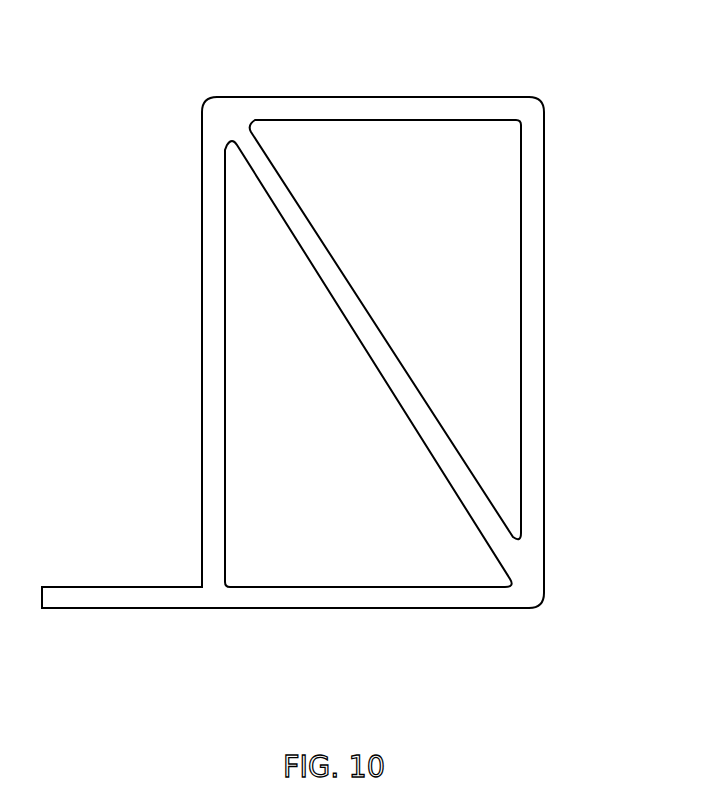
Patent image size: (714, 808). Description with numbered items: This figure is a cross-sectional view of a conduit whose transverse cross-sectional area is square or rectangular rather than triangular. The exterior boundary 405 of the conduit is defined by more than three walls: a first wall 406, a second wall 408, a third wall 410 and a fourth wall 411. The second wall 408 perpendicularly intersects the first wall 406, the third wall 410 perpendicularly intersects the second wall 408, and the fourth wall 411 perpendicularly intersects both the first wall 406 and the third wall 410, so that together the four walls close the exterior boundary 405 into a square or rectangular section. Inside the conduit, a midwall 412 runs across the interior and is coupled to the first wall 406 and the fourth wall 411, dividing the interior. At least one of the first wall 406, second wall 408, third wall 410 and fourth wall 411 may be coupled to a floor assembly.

The exterior boundary 405 is at (336, 89).
The fourth wall 411 is at (452, 89).
The third wall 410 is at (187, 364).
The first wall 406 is at (558, 364).
The second wall 408 is at (363, 616).
The midwall 412 is at (392, 323).